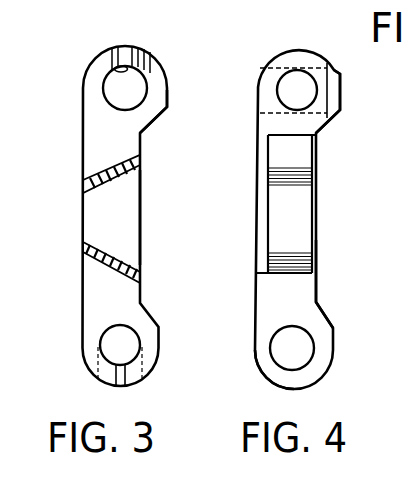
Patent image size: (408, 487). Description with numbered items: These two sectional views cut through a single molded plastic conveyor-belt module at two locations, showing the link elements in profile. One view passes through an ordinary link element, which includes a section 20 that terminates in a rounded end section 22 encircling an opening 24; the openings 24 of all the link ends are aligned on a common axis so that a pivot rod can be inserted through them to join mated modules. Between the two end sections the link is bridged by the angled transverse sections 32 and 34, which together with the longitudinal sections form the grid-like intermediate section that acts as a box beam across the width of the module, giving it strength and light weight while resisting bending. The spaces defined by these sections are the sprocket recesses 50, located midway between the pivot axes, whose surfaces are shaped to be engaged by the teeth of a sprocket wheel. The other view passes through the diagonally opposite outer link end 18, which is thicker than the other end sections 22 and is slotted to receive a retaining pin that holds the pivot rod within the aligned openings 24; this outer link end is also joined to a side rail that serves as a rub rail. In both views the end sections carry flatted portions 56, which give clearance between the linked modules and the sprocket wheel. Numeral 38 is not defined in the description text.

In FIG. 4, the outer link end 18 is at (297, 55).
In FIG. 4, the section 20 is at (310, 290).
In FIG. 4, the end section 22 is at (277, 379).
In FIG. 4, the opening 24 is at (296, 351).
In FIG. 3, the transverse section 32 is at (83, 250).
In FIG. 3, the transverse section 34 is at (83, 191).
In FIG. 3, the upper bore 38 is at (116, 66).
In FIG. 3, the sprocket recess 50 is at (118, 211).
In FIG. 3, the flatted portion 56 is at (167, 84).
In FIG. 4, the flatted portion 56 is at (341, 84).